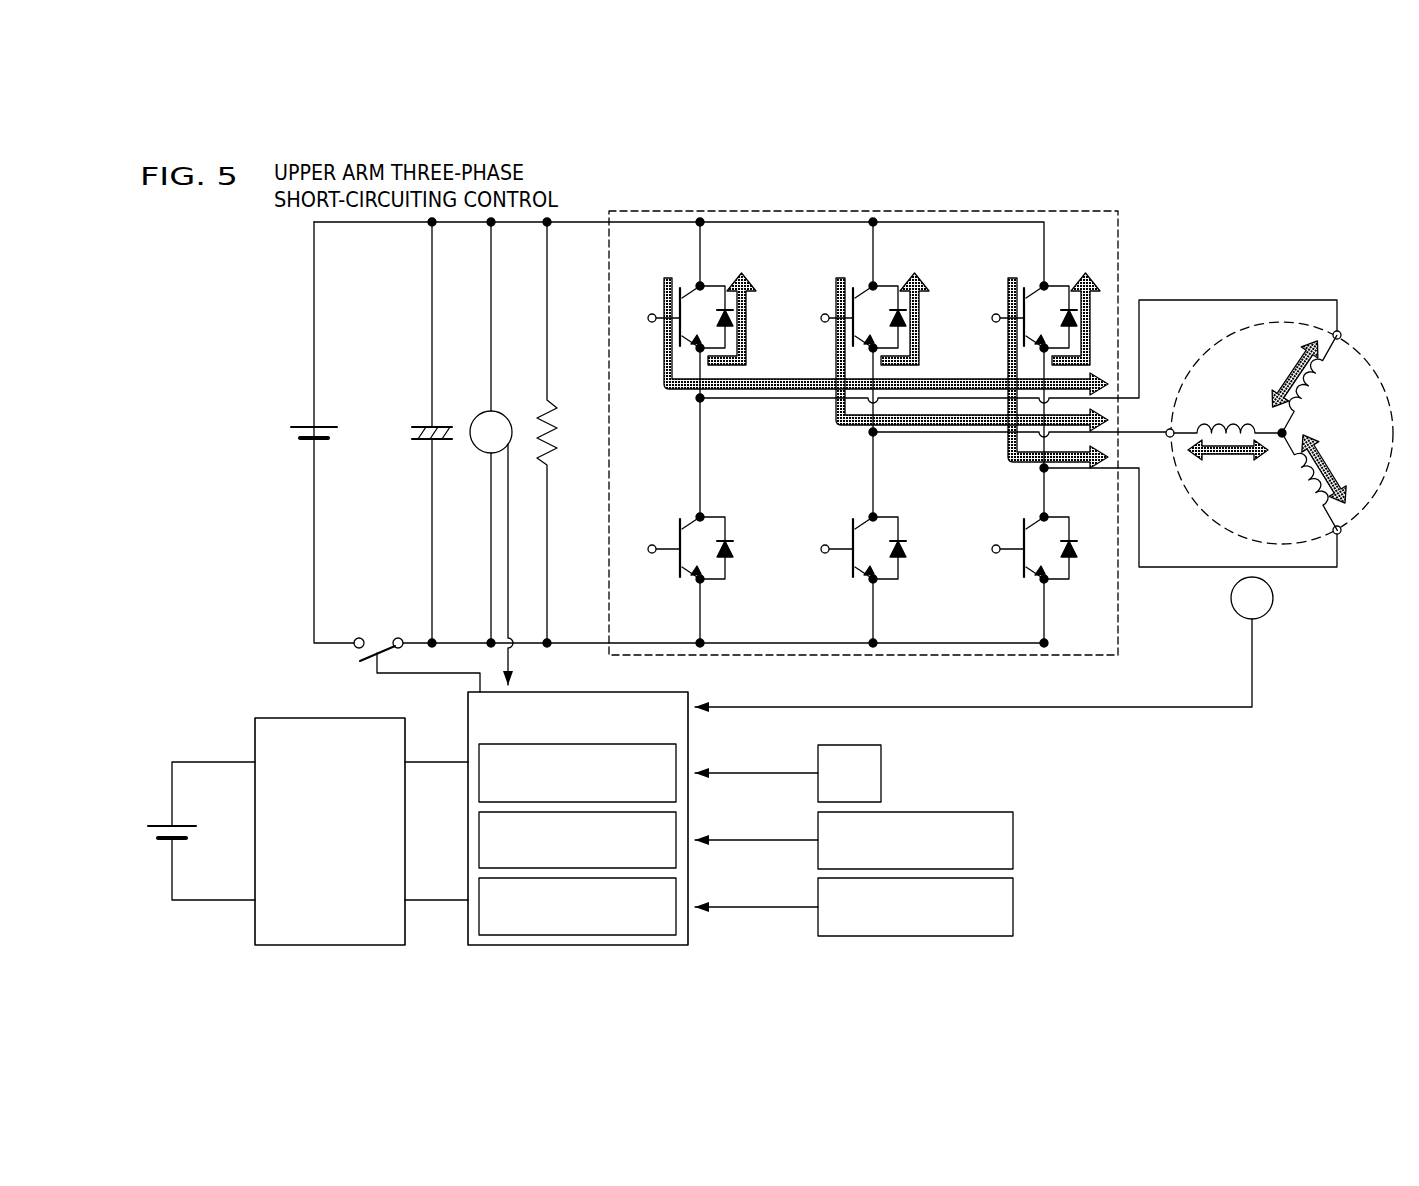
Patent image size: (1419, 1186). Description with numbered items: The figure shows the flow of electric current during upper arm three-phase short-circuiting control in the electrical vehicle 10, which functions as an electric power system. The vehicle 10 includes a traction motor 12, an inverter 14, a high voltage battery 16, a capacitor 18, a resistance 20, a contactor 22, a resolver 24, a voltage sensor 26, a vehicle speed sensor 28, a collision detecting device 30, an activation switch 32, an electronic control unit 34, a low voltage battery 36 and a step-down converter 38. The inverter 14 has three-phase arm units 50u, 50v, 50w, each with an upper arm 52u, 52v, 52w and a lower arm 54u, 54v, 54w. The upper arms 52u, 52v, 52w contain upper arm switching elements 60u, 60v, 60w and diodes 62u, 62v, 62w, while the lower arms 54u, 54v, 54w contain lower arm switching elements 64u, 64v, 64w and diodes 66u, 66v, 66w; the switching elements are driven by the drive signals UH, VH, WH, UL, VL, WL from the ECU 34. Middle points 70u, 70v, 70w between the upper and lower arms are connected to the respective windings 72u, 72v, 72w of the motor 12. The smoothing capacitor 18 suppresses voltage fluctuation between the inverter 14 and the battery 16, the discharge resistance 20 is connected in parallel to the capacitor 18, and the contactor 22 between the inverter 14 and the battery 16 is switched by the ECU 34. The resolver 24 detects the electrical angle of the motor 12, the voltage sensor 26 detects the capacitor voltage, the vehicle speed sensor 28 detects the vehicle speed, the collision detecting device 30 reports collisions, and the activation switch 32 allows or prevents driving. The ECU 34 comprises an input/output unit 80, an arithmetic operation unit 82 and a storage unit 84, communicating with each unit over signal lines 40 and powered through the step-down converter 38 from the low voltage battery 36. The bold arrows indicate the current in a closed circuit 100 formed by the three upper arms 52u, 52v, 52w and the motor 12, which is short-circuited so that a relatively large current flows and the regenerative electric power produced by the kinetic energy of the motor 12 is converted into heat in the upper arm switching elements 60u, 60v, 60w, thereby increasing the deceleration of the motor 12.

The electrical vehicle 10 is at (254, 262).
The traction motor 12 is at (1366, 330).
The inverter 14 is at (1120, 223).
The high voltage battery 16 is at (305, 422).
The capacitor 18 is at (421, 422).
The resistance 20 is at (552, 410).
The contactor 22 is at (378, 640).
The resolver 24 is at (1274, 599).
The voltage sensor 26 is at (485, 455).
The vehicle speed sensor 28 is at (881, 753).
The collision detecting device 30 is at (1013, 822).
The activation switch 32 is at (1013, 889).
The electronic control unit 34 is at (586, 692).
The low voltage battery 36 is at (155, 824).
The step-down converter 38 is at (298, 717).
The signal lines 40 is at (505, 661).
The u-phase arm unit 50u is at (716, 217).
The v-phase arm unit 50v is at (883, 217).
The w-phase arm unit 50w is at (1050, 217).
The u-phase upper arm 52u is at (687, 273).
The v-phase upper arm 52v is at (860, 273).
The w-phase upper arm 52w is at (1031, 273).
The u-phase lower arm 54u is at (687, 499).
The v-phase lower arm 54v is at (860, 499).
The w-phase lower arm 54w is at (1031, 499).
The u-phase upper arm switching element 60u is at (664, 288).
The v-phase upper arm switching element 60v is at (836, 288).
The w-phase upper arm switching element 60w is at (1008, 288).
The u-phase upper arm diode 62u is at (746, 328).
The v-phase upper arm diode 62v is at (919, 328).
The w-phase upper arm diode 62w is at (1090, 328).
The u-phase lower arm switching element 64u is at (676, 521).
The v-phase lower arm switching element 64v is at (849, 521).
The w-phase lower arm switching element 64w is at (1020, 521).
The u-phase lower arm diode 66u is at (738, 550).
The v-phase lower arm diode 66v is at (911, 550).
The w-phase lower arm diode 66w is at (1082, 550).
The u-phase middle point 70u is at (703, 402).
The v-phase middle point 70v is at (876, 436).
The w-phase middle point 70w is at (1047, 472).
The u-phase winding 72u is at (1322, 386).
The v-phase winding 72v is at (1218, 408).
The w-phase winding 72w is at (1300, 490).
The input/output unit 80 is at (672, 753).
The arithmetic operation unit 82 is at (672, 820).
The storage unit 84 is at (672, 887).
The closed circuit 100 is at (1102, 279).